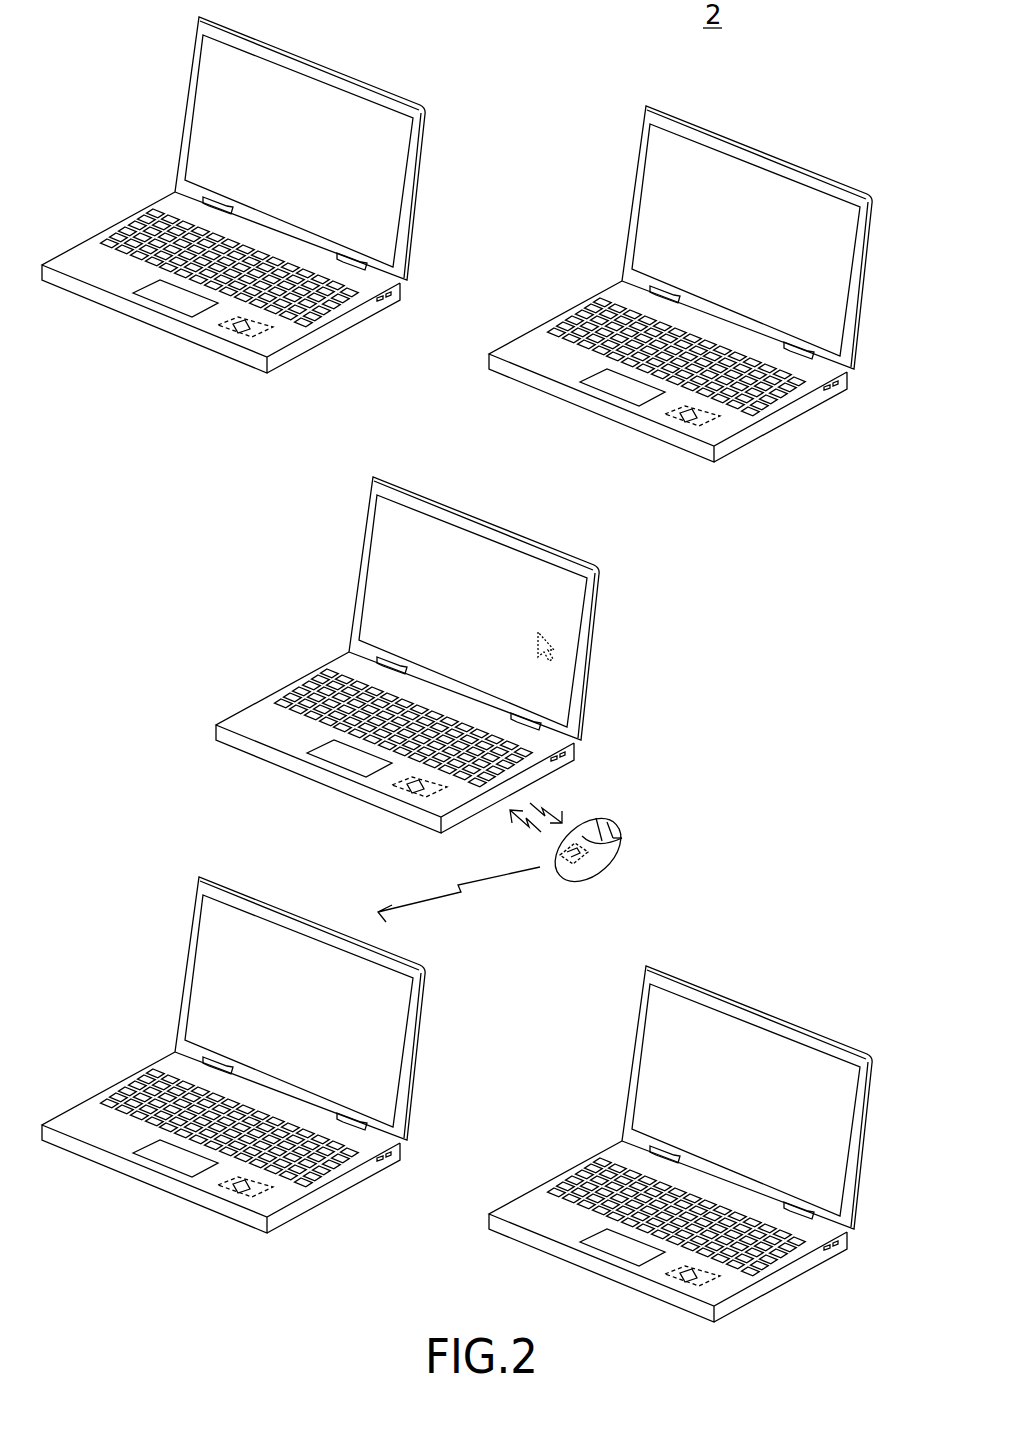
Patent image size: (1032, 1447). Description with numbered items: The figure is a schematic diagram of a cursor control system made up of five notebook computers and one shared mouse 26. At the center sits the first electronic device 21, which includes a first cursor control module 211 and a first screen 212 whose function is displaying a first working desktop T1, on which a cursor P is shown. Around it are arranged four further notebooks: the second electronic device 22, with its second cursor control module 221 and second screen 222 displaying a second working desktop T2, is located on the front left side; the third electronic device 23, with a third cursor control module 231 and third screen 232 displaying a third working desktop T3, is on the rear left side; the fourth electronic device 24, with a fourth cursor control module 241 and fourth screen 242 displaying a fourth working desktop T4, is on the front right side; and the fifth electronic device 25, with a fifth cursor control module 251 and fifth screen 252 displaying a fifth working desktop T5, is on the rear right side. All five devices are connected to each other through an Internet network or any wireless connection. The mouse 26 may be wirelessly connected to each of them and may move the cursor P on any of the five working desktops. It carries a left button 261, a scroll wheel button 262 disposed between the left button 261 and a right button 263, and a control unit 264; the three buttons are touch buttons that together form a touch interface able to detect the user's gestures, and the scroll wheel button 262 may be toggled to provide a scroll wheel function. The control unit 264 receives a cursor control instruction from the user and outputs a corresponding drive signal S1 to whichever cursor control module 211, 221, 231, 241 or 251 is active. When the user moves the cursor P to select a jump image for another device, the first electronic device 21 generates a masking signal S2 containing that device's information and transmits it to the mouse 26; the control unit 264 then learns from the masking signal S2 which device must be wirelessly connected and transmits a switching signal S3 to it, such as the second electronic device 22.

The first electronic device 21 is at (430, 662).
The first cursor control module 211 is at (404, 817).
The first screen 212 is at (478, 608).
The first working desktop T1 is at (449, 611).
The cursor P is at (540, 633).
The second electronic device 22 is at (256, 1062).
The second cursor control module 221 is at (230, 1217).
The second screen 222 is at (304, 1008).
The second working desktop T2 is at (275, 1011).
The third electronic device 23 is at (256, 202).
The third cursor control module 231 is at (238, 326).
The third screen 232 is at (304, 148).
The third working desktop T3 is at (208, 122).
The fourth electronic device 24 is at (703, 1151).
The fourth cursor control module 241 is at (677, 1306).
The fourth screen 242 is at (751, 1097).
The fourth working desktop T4 is at (722, 1100).
The fifth electronic device 25 is at (703, 291).
The fifth cursor control module 251 is at (677, 446).
The fifth screen 252 is at (751, 237).
The fifth working desktop T5 is at (722, 240).
The mouse 26 is at (611, 866).
The left button 261 is at (594, 822).
The scroll wheel button 262 is at (614, 836).
The right button 263 is at (621, 841).
The control unit 264 is at (556, 860).
The drive signal S1 is at (515, 834).
The masking signal S2 is at (553, 801).
The switching signal S3 is at (459, 887).